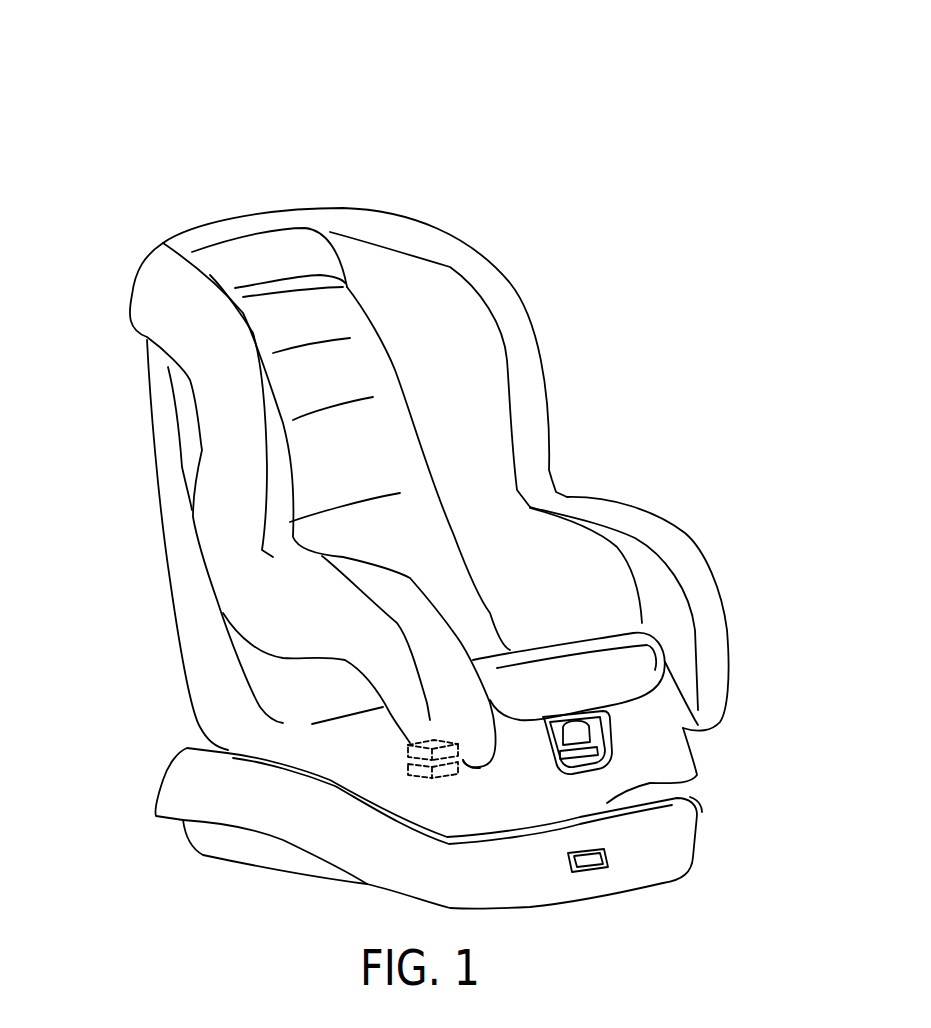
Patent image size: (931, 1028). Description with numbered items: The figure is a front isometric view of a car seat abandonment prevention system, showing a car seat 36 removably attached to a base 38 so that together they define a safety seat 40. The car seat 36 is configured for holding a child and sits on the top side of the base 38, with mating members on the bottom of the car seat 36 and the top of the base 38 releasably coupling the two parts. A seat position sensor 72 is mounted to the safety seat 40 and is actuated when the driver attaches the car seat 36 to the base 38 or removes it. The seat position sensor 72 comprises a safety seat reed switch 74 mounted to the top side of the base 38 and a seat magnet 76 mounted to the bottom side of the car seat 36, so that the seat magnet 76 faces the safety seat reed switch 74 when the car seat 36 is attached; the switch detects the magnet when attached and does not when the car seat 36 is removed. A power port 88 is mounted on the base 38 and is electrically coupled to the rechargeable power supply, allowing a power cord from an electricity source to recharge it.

The safety seat 40 is at (587, 137).
The car seat 36 is at (460, 362).
The base 38 is at (670, 850).
The seat position sensor 72 is at (484, 767).
The safety seat reed switch 74 is at (408, 775).
The seat magnet 76 is at (408, 746).
The power port 88 is at (593, 872).